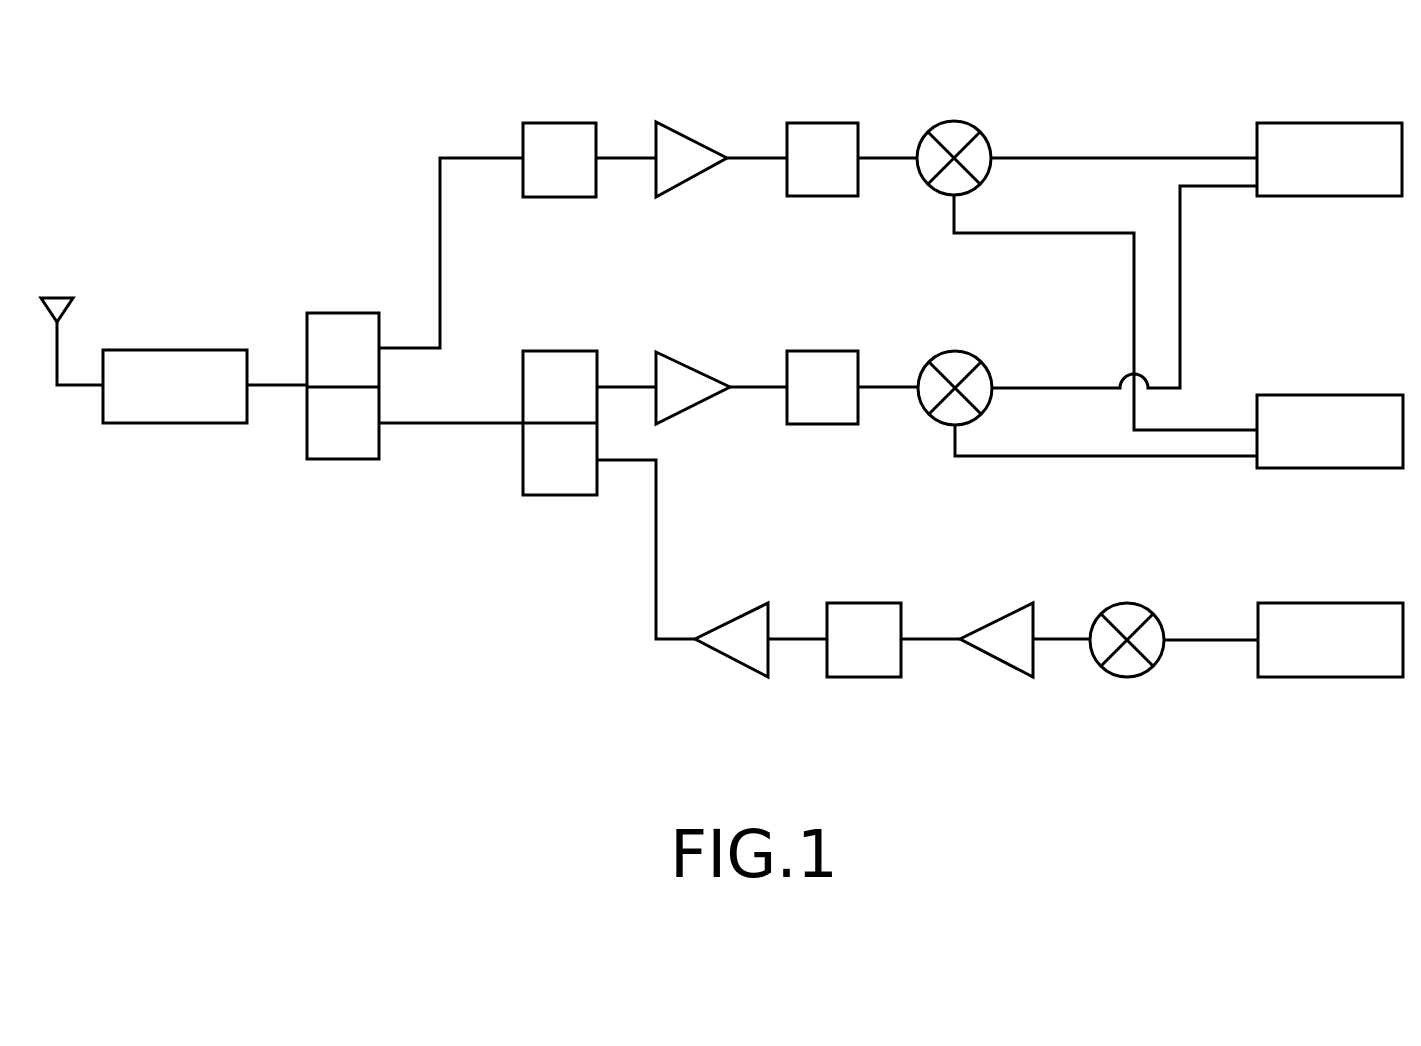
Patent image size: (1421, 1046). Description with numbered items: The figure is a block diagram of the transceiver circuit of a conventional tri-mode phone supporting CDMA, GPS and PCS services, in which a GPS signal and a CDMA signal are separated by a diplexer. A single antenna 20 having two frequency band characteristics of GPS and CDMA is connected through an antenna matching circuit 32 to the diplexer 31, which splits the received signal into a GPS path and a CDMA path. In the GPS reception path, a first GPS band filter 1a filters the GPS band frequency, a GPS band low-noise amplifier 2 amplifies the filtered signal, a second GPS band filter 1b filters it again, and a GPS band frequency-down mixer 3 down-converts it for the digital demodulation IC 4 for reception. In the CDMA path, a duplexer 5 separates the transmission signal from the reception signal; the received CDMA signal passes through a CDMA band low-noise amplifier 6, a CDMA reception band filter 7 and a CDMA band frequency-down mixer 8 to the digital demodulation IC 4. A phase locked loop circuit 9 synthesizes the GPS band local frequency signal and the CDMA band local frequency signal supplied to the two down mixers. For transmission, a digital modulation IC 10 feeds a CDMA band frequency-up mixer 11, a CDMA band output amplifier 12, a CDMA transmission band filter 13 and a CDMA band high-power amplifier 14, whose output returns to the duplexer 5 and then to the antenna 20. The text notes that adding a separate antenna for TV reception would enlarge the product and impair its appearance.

The antenna 20 is at (57, 298).
The antenna matching circuit 32 is at (173, 350).
The diplexer 31 is at (341, 313).
The first GPS band filter 1a is at (558, 123).
The GPS band low-noise amplifier 2 is at (688, 138).
The second GPS band filter 1b is at (820, 123).
The GPS band frequency-down mixer 3 is at (951, 121).
The digital demodulation IC 4 is at (1326, 123).
The duplexer 5 is at (556, 351).
The CDMA band low-noise amplifier 6 is at (688, 366).
The CDMA reception band filter 7 is at (821, 351).
The CDMA band frequency-down mixer 8 is at (952, 351).
The phase locked loop circuit 9 is at (1329, 395).
The digital modulation IC 10 is at (1329, 603).
The CDMA band frequency-up mixer 11 is at (1124, 603).
The CDMA band output amplifier 12 is at (994, 621).
The CDMA transmission band filter 13 is at (862, 603).
The CDMA band high-power amplifier 14 is at (729, 620).